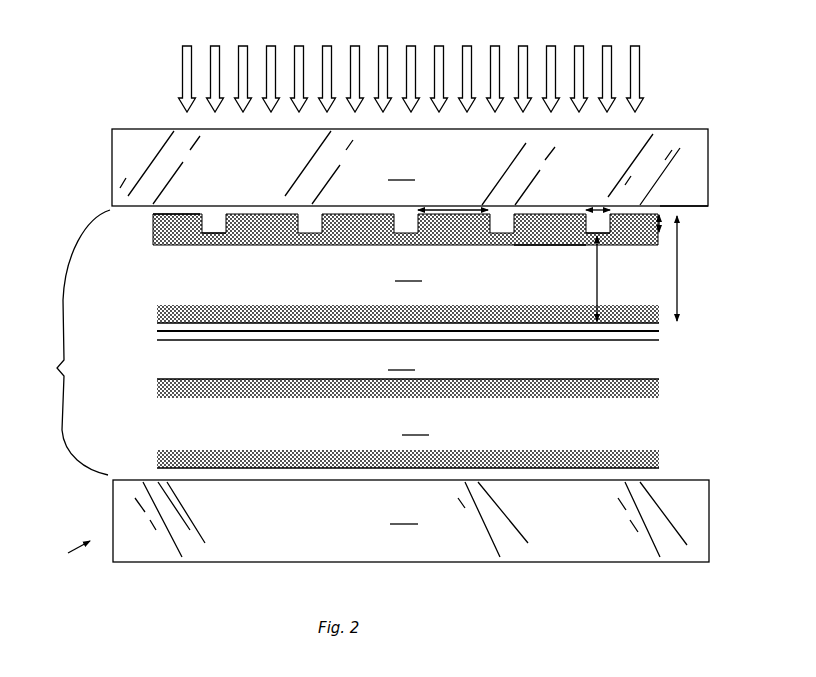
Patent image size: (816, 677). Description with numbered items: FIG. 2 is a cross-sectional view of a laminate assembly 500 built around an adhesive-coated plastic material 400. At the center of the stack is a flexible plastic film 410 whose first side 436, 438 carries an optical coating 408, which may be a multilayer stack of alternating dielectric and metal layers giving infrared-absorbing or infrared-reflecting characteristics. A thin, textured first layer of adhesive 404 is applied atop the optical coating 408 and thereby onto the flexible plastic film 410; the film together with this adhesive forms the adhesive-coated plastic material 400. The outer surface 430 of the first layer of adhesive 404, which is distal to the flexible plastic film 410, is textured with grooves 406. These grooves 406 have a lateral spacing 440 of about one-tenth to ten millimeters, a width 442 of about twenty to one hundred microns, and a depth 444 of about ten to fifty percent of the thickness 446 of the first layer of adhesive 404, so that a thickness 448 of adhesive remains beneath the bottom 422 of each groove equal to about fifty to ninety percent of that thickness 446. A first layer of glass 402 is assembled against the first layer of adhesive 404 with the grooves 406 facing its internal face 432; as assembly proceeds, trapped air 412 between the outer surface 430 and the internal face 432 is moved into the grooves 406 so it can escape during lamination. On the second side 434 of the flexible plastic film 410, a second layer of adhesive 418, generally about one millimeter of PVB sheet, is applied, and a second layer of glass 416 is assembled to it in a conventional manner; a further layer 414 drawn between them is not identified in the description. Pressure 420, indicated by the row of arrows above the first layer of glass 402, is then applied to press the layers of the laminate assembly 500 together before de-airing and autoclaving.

The adhesive-coated plastic material 400 is at (62, 342).
The first layer of glass 402 is at (410, 167).
The first layer of adhesive 404 is at (405, 248).
The grooves 406 is at (578, 238).
The optical coating 408 is at (143, 326).
The flexible plastic film 410 is at (408, 375).
The trapped air 412 is at (214, 236).
The back contact layer 414 is at (164, 477).
The second layer of glass 416 is at (411, 521).
The second layer of adhesive 418 is at (416, 427).
The pressure 420 is at (642, 84).
The bottom of the grooves 422 is at (602, 238).
The outer surface of the first layer of adhesive 430 is at (154, 213).
The internal face of the first layer of glass 432 is at (695, 206).
The second side of the flexible plastic film 434 is at (598, 378).
The first side of the flexible plastic film 436 is at (548, 342).
The first side of the flexible plastic film 438 is at (480, 326).
The lateral spacing of the grooves 440 is at (470, 210).
The width of the grooves 442 is at (594, 209).
The depth of the grooves 444 is at (660, 233).
The thickness of the first layer of adhesive 446 is at (680, 272).
The remaining adhesive thickness beneath the grooves 448 is at (595, 291).
The laminate assembly 500 is at (63, 556).